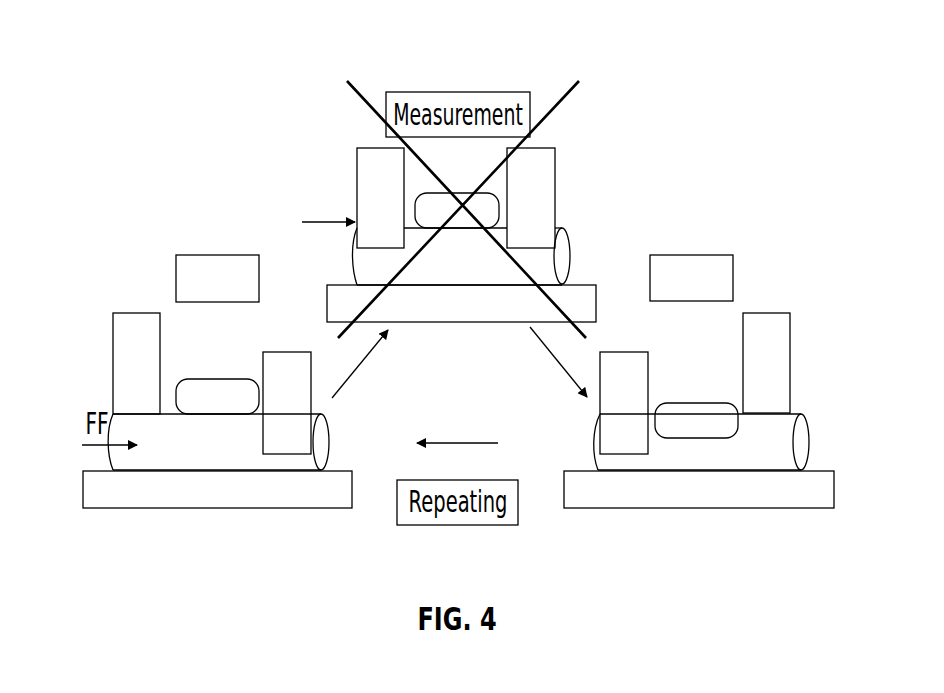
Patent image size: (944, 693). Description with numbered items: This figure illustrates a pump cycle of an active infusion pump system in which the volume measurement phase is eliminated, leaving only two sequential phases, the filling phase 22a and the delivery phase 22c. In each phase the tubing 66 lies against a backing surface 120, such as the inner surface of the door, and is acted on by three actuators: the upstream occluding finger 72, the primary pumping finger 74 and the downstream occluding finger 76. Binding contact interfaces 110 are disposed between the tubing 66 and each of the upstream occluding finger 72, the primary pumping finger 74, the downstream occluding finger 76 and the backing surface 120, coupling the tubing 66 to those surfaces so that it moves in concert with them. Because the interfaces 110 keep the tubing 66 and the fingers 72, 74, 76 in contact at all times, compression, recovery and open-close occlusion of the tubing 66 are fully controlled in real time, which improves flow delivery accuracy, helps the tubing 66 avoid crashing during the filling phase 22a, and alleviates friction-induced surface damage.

The filling phase 22a is at (218, 255).
The delivery phase 22c is at (693, 255).
The tubing 66 is at (323, 420).
The upstream occluding finger 72 is at (137, 313).
The primary pumping finger 74 is at (217, 379).
The downstream occluding finger 76 is at (287, 352).
The binding contact interfaces 110 is at (138, 414).
The backing surface 120 is at (105, 508).